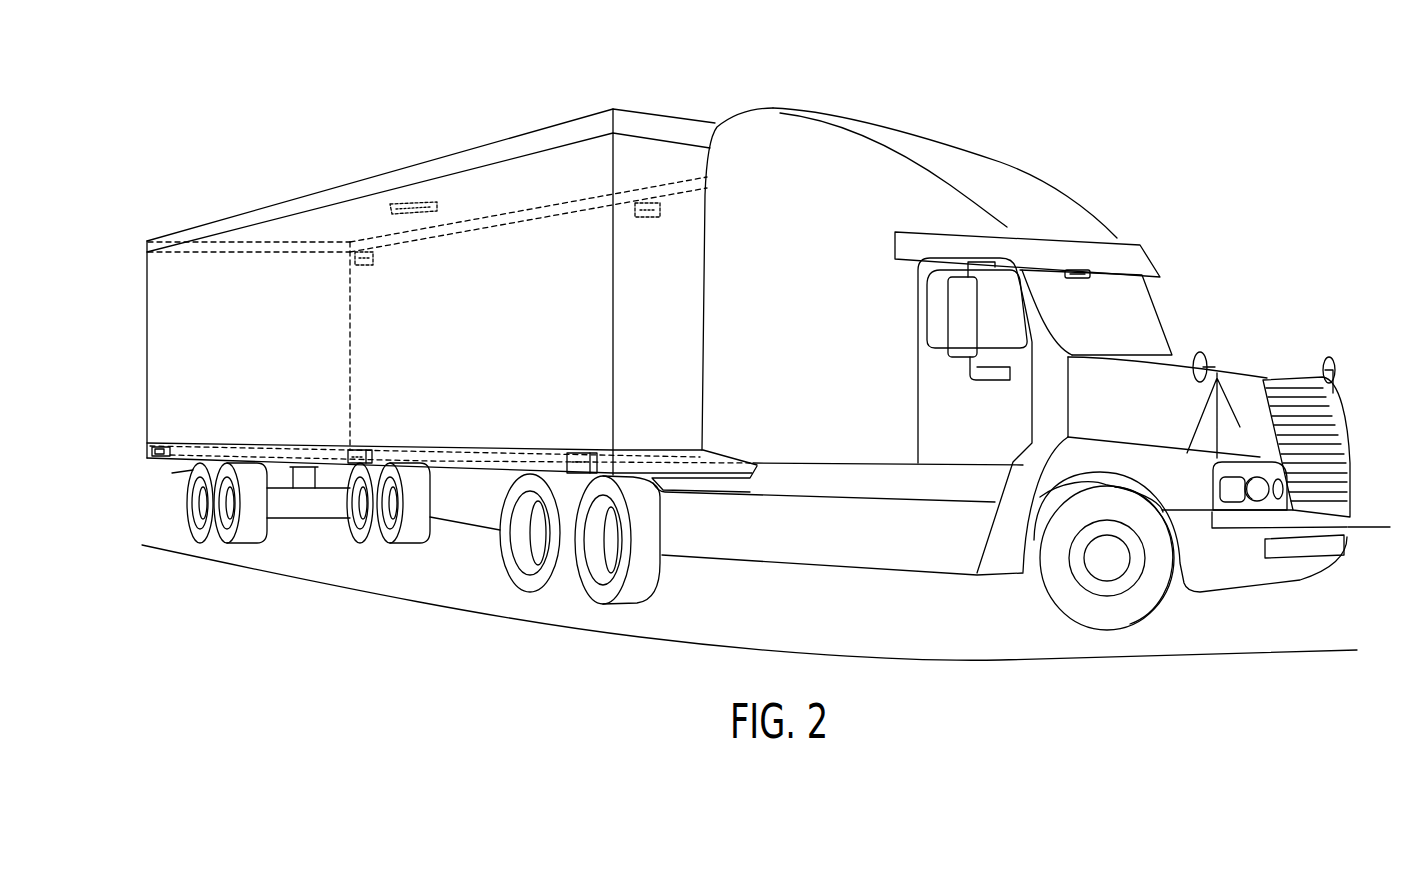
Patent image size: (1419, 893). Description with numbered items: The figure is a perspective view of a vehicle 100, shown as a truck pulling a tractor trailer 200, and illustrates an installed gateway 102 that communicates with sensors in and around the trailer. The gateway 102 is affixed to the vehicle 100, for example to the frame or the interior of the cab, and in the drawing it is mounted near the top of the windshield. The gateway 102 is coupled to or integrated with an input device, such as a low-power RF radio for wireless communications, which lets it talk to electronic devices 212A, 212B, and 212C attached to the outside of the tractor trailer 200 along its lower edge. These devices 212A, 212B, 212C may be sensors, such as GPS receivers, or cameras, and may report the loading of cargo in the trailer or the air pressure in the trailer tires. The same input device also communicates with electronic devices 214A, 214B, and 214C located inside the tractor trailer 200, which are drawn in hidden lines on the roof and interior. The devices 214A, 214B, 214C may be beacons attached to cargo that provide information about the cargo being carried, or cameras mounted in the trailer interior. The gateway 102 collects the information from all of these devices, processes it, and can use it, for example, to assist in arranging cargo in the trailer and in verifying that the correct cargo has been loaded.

The vehicle 100 is at (1144, 248).
The gateway 102 is at (1090, 272).
The tractor trailer 200 is at (487, 143).
The electronic device 212A is at (162, 457).
The electronic device 212B is at (358, 463).
The electronic device 212C is at (577, 468).
The electronic device 214A is at (360, 255).
The electronic device 214B is at (403, 203).
The electronic device 214C is at (648, 204).